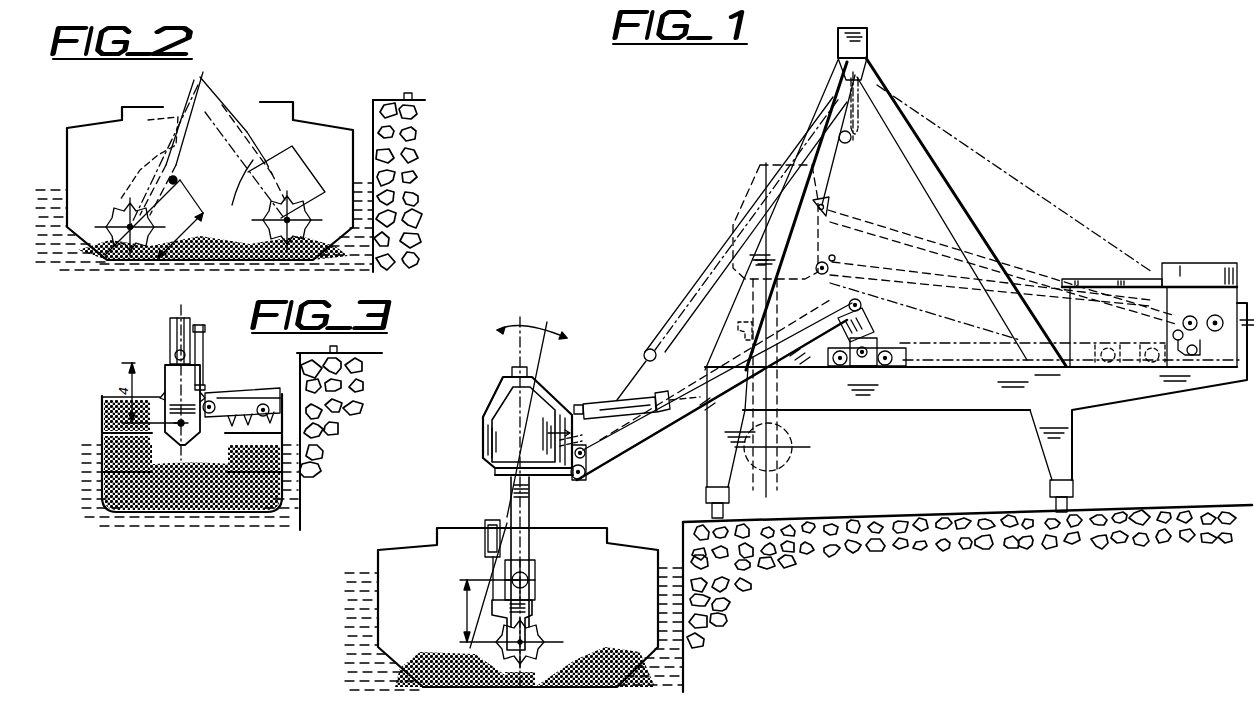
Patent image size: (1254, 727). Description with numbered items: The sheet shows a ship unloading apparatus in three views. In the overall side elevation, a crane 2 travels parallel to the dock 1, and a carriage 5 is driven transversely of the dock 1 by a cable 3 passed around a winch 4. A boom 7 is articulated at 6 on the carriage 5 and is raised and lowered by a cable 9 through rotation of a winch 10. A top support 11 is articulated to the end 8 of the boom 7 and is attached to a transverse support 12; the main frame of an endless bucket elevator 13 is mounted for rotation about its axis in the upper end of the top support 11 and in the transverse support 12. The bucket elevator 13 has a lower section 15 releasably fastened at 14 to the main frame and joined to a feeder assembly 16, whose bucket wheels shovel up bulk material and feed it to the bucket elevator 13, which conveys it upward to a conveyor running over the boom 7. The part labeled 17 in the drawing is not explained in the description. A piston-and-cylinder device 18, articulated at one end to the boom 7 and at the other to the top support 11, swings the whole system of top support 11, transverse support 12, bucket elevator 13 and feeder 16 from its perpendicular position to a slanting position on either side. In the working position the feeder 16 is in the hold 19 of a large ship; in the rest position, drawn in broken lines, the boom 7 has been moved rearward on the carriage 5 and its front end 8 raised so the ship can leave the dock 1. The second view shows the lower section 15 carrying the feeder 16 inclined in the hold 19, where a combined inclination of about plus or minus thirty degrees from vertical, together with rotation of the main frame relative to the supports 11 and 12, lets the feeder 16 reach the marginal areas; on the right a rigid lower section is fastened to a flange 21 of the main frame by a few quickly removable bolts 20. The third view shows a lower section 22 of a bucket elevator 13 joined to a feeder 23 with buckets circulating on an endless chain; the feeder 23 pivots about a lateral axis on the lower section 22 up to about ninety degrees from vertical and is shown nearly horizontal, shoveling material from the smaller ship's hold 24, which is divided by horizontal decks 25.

In FIG. 1, the dock 1 is at (703, 658).
In FIG. 1, the crane 2 is at (961, 397).
In FIG. 1, the cable 3 is at (923, 358).
In FIG. 1, the winch 4 is at (1190, 316).
In FIG. 1, the carriage 5 is at (882, 342).
In FIG. 1, the articulation 6 is at (868, 335).
In FIG. 1, the boom 7 is at (677, 430).
In FIG. 1, the end of the boom 8 is at (586, 473).
In FIG. 1, the cable 9 is at (704, 275).
In FIG. 1, the winch 10 is at (1216, 315).
In FIG. 1, the top support 11 is at (548, 386).
In FIG. 1, the transverse support 12 is at (548, 478).
In FIG. 2, the bucket elevator 13 is at (187, 110).
In FIG. 3, the bucket elevator 13 is at (176, 352).
In FIG. 1, the bucket elevator 13 is at (505, 505).
In FIG. 2, the releasable fastening 14 is at (178, 179).
In FIG. 1, the releasable fastening 14 is at (528, 578).
In FIG. 2, the lower section 15 is at (133, 207).
In FIG. 1, the lower section 15 is at (534, 627).
In FIG. 2, the feeder assembly 16 is at (298, 240).
In FIG. 1, the feeder assembly 16 is at (535, 647).
In FIG. 2, the bracket 17 is at (153, 170).
In FIG. 3, the bracket 17 is at (205, 372).
In FIG. 1, the bracket 17 is at (493, 588).
In FIG. 1, the piston-and-cylinder device 18 is at (611, 400).
In FIG. 2, the hold 19 is at (90, 153).
In FIG. 1, the hold 19 is at (617, 562).
In FIG. 2, the bolts 20 is at (236, 191).
In FIG. 2, the flange 21 is at (257, 135).
In FIG. 3, the lower section 22 is at (175, 390).
In FIG. 3, the feeder 23 is at (243, 398).
In FIG. 3, the hold 24 is at (183, 515).
In FIG. 3, the horizontal decks 25 is at (213, 458).